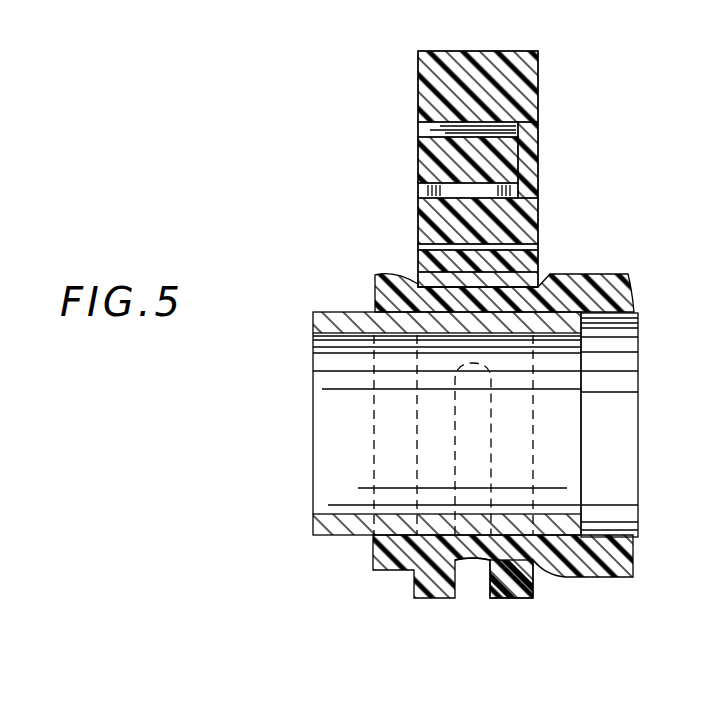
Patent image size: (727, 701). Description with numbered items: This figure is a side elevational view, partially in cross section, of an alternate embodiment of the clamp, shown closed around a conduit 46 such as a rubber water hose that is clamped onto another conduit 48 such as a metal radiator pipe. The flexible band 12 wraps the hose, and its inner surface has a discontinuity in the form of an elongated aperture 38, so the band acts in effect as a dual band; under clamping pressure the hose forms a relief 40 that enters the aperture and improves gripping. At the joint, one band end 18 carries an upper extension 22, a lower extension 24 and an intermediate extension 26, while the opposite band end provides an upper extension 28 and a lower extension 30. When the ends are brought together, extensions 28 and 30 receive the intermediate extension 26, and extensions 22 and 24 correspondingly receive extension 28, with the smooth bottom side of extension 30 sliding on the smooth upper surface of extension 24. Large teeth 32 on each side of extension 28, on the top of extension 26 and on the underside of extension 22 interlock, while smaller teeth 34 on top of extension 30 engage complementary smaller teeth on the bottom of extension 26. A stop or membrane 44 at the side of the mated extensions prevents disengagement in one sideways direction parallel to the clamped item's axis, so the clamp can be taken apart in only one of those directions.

The band 12 is at (415, 584).
The band end 18 is at (540, 62).
The upper extension 22 is at (458, 72).
The lower extension 24 is at (520, 278).
The intermediate extension 26 is at (435, 225).
The upper extension 28 is at (465, 153).
The lower extension 30 is at (533, 255).
The large teeth 32 is at (422, 190).
The smaller teeth 34 is at (418, 247).
The elongated aperture 38 is at (488, 592).
The relief 40 is at (473, 572).
The stop or membrane 44 is at (530, 155).
The conduit 46 is at (624, 441).
The conduit 48 is at (354, 438).